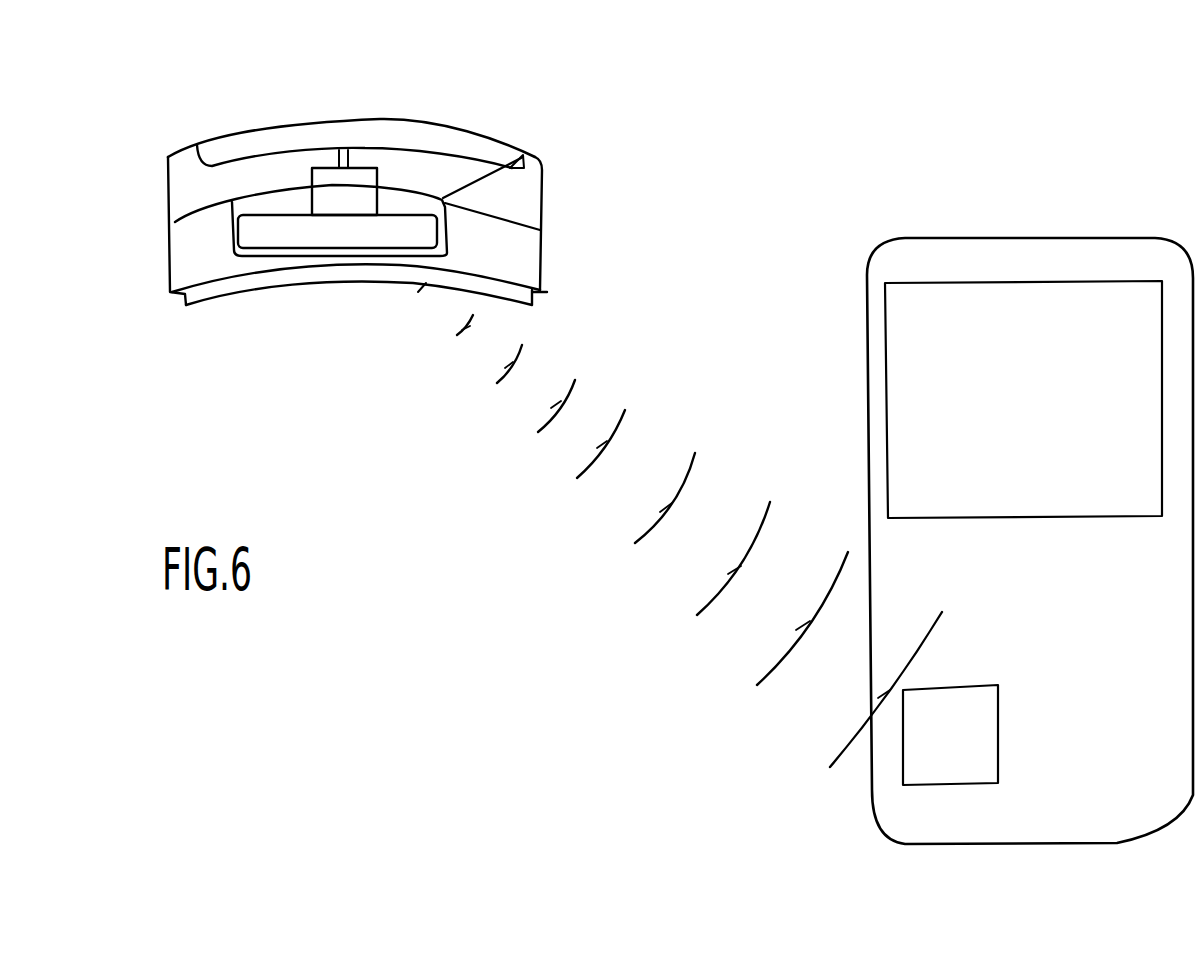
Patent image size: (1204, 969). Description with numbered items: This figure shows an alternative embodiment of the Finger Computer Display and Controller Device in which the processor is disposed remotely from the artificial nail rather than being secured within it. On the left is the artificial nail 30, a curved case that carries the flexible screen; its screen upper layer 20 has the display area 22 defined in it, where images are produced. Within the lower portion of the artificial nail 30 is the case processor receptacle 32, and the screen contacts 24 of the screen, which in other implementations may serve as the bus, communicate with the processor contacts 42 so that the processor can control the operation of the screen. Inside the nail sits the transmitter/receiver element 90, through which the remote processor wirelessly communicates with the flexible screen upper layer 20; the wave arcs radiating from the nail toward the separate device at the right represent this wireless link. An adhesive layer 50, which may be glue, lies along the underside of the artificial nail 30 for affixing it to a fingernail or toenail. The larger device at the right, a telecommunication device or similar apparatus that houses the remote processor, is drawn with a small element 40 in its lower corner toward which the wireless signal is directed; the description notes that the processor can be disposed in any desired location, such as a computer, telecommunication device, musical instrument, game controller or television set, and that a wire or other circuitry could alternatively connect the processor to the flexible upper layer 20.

The screen upper layer 20 is at (543, 197).
The display area 22 is at (463, 148).
The screen contacts 24 is at (365, 173).
The artificial nail 30 is at (527, 250).
The case processor receptacle 32 is at (525, 158).
The receiver module of mobile device 40 is at (922, 735).
The processor contacts 42 is at (340, 200).
The adhesive layer 50 is at (537, 298).
The transmitter/receiver element 90 is at (283, 228).